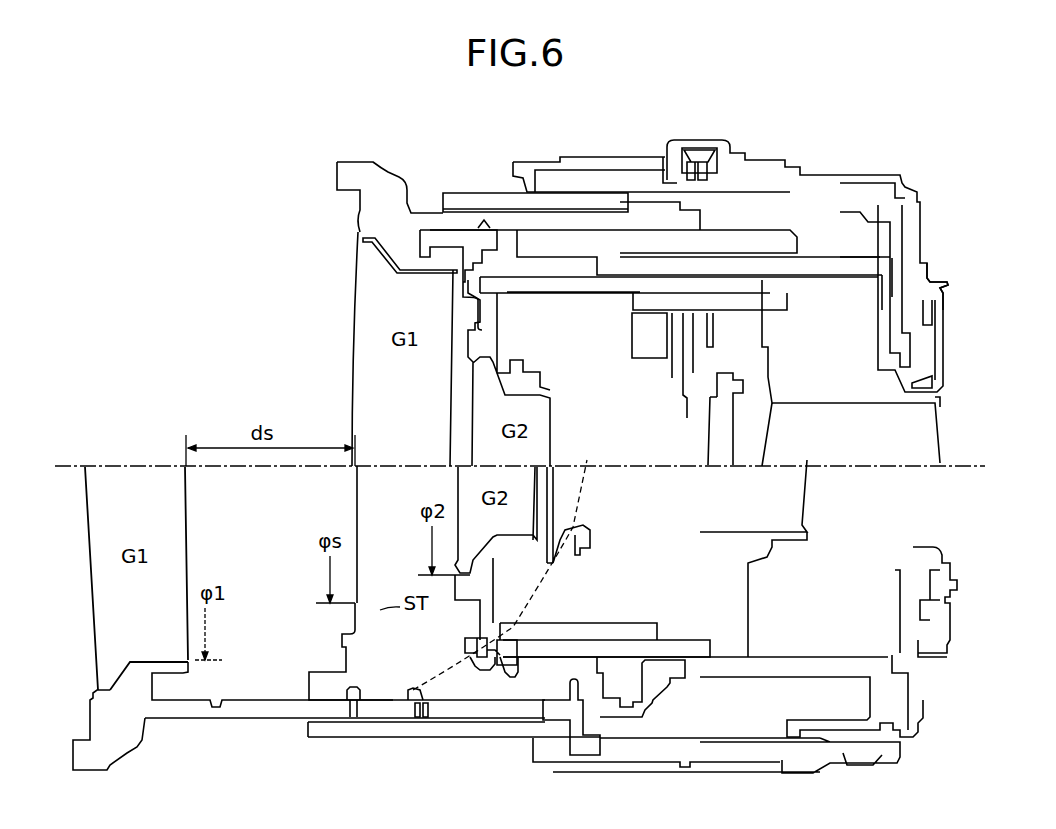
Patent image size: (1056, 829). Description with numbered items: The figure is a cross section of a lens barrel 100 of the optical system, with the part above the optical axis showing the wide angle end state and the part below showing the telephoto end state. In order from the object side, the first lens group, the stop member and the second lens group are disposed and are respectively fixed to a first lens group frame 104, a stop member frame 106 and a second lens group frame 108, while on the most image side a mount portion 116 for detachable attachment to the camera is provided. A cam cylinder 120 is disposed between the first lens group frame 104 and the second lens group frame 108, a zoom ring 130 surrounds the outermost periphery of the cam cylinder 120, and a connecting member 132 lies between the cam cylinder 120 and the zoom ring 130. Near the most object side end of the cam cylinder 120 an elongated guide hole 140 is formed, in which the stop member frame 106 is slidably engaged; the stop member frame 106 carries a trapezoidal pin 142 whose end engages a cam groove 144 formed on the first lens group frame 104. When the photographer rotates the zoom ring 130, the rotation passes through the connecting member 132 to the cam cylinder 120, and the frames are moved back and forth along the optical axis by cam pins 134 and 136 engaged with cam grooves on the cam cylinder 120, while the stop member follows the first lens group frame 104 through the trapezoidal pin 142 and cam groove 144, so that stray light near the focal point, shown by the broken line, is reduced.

The lens barrel 100 is at (757, 140).
The first lens group frame 104 is at (233, 710).
The stop member frame 106 is at (440, 238).
The second lens group frame 108 is at (465, 641).
The mount portion 116 is at (948, 285).
The cam cylinder 120 is at (610, 688).
The zoom ring 130 is at (712, 750).
The connecting member 132 is at (582, 748).
The cam pin 134 is at (350, 723).
The cam pin 136 is at (477, 677).
The elongated guide hole 140 is at (418, 250).
The trapezoidal pin 142 is at (480, 228).
The cam groove 144 is at (487, 228).